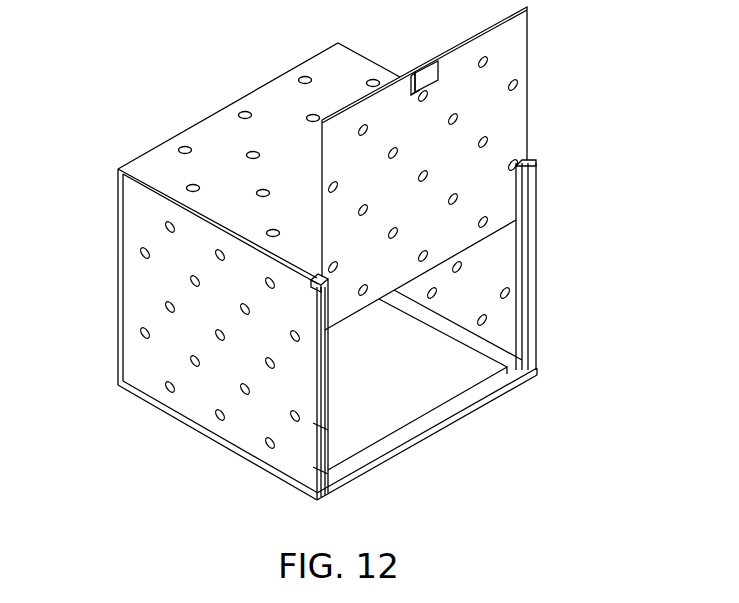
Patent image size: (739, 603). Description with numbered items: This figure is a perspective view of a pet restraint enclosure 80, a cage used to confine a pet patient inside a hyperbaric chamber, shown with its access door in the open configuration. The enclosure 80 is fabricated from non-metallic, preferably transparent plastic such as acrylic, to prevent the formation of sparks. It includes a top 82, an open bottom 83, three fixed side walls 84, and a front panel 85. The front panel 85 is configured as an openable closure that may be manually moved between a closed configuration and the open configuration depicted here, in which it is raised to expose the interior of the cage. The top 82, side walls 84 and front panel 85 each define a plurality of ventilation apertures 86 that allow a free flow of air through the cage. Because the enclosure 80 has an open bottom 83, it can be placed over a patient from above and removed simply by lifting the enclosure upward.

The pet restraint enclosure 80 is at (336, 253).
The top 82 is at (222, 138).
The open bottom 83 is at (422, 388).
The fixed side wall 84 is at (137, 303).
The front panel 85 is at (516, 134).
The ventilation aperture 86 is at (187, 188).